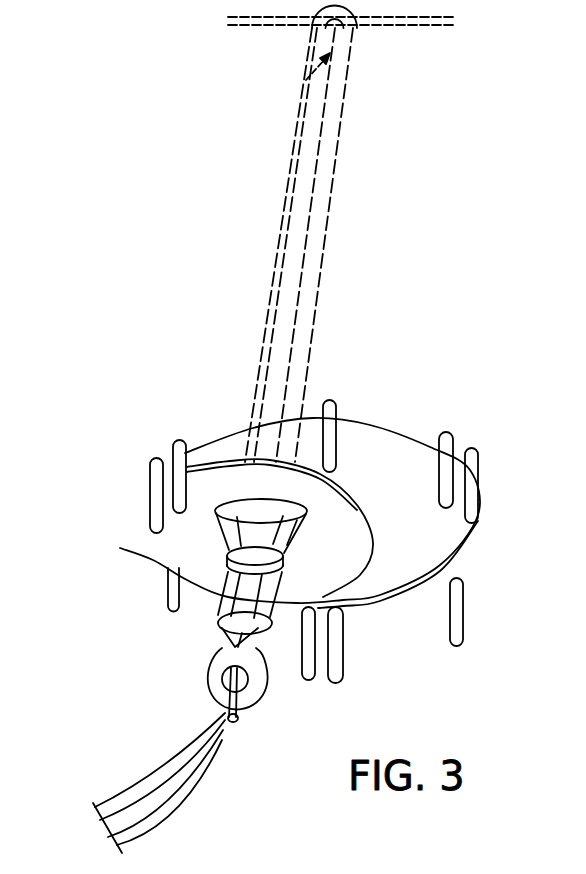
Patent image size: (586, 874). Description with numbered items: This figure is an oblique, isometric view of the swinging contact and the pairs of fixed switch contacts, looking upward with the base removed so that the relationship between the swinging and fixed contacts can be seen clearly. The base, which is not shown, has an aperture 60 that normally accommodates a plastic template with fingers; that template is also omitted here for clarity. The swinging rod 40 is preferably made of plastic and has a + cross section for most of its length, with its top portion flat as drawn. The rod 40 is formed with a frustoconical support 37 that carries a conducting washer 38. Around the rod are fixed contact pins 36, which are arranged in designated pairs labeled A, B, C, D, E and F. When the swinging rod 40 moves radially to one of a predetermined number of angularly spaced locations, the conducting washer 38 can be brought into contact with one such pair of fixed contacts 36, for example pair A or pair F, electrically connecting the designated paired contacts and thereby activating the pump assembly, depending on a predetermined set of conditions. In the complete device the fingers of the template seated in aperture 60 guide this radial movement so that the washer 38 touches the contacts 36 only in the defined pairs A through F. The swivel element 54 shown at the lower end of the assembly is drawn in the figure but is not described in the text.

The swinging rod 40 is at (298, 162).
The aperture 60 is at (408, 487).
The fixed contact pins 36 is at (479, 463).
The conducting washer 38 is at (146, 514).
The frustoconical support 37 is at (234, 551).
The swivel 54 is at (210, 692).
The contact pair A is at (452, 620).
The contact pair B is at (478, 490).
The contact pair C is at (438, 438).
The contact pair D is at (187, 456).
The contact pair E is at (150, 530).
The contact pair F is at (302, 641).